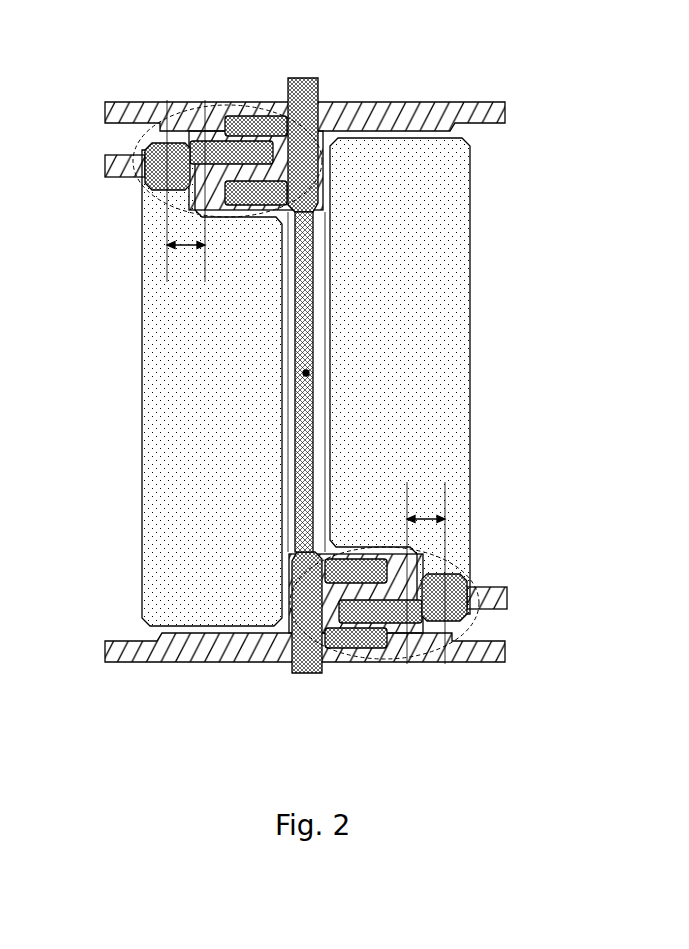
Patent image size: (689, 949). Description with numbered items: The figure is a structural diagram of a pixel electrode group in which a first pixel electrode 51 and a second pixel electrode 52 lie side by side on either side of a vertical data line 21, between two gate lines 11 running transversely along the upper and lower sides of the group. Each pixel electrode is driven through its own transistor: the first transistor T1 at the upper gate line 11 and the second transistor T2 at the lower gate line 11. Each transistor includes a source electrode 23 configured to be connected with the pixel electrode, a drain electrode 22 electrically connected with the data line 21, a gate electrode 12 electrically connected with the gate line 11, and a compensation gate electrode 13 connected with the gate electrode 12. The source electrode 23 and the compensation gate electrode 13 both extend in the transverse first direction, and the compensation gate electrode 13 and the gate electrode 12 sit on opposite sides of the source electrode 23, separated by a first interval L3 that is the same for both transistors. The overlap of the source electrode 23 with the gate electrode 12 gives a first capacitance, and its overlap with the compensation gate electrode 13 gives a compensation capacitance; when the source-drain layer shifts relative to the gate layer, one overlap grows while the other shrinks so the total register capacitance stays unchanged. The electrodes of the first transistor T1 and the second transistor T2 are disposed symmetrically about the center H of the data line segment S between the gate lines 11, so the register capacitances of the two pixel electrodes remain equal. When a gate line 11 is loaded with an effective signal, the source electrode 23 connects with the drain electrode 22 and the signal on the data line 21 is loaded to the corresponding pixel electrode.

The gate line 11 is at (385, 103).
The gate electrode 12 is at (200, 160).
The compensation gate electrode 13 is at (105, 168).
The data line 21 is at (308, 78).
The drain electrode 22 is at (260, 117).
The source electrode 23 is at (147, 190).
The first pixel electrode 51 is at (147, 381).
The second pixel electrode 52 is at (418, 368).
The data line segment S is at (325, 330).
The center H is at (306, 388).
The first transistor T1 is at (162, 207).
The second transistor T2 is at (450, 557).
The first interval L3 is at (306, 382).